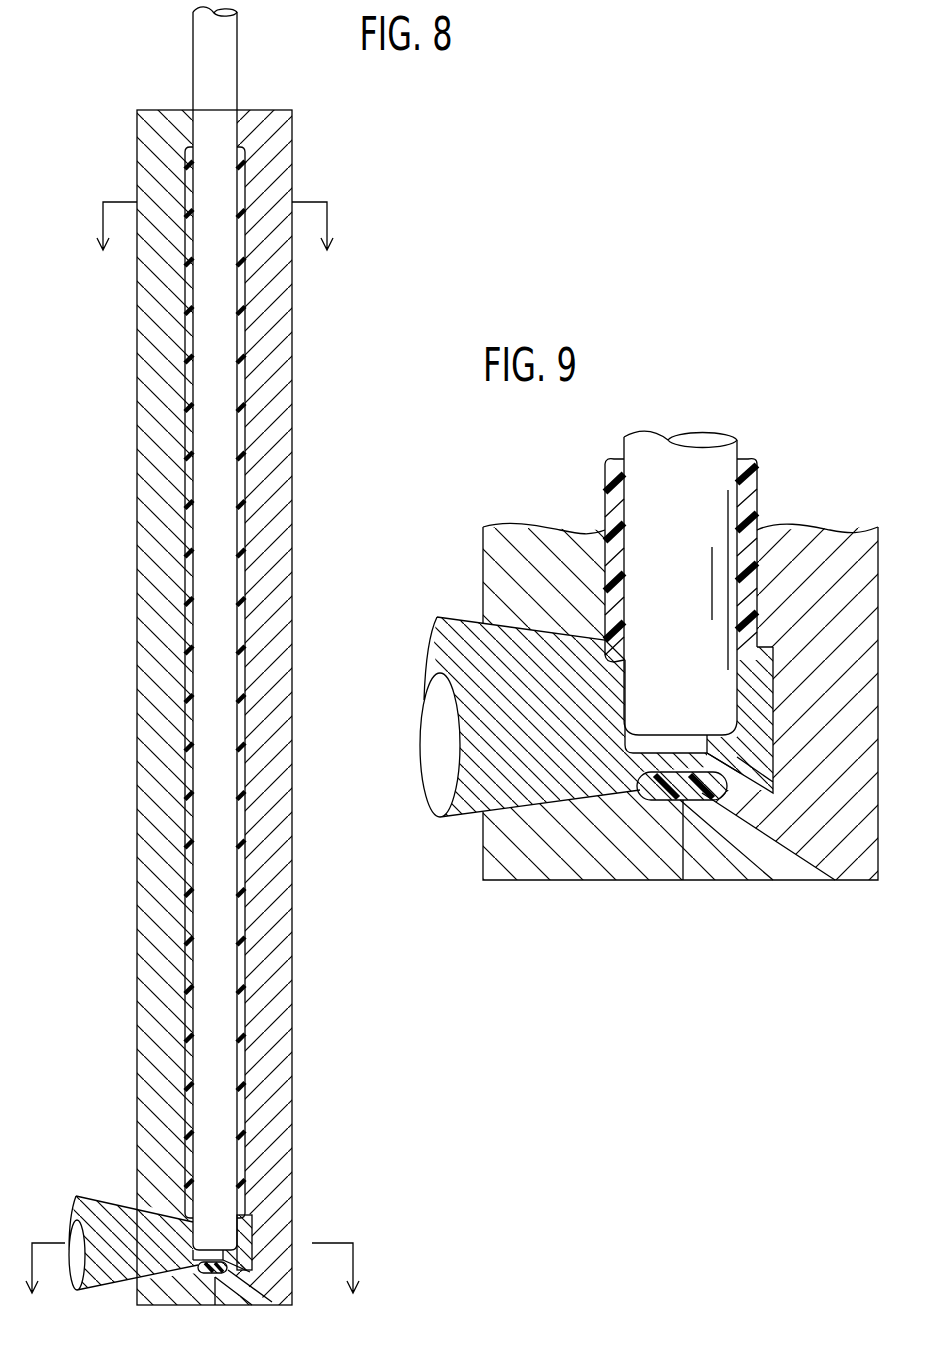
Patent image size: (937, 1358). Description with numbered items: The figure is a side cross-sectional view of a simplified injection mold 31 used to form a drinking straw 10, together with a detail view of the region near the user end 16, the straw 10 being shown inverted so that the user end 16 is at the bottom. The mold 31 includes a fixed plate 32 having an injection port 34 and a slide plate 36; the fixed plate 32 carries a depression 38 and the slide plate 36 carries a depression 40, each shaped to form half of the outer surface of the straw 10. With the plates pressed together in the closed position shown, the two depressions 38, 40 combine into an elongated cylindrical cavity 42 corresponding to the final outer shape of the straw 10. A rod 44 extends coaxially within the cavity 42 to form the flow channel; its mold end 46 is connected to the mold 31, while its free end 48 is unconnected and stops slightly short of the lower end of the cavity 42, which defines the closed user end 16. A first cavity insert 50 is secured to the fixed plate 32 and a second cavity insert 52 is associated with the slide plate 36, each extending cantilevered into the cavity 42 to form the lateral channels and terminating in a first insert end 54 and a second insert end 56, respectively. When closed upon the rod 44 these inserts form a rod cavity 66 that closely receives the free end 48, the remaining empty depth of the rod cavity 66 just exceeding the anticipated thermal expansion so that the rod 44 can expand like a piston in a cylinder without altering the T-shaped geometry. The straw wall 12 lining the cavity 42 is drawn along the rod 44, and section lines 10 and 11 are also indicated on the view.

In FIG. 8, the straw 10 is at (214, 248).
In FIG. 8, the section line 11- 11 is at (193, 1287).
In FIG. 8, the sleeve 12 is at (188, 395).
In FIG. 9, the sleeve 12 is at (605, 487).
In FIG. 8, the user end 16 is at (212, 1267).
In FIG. 9, the user end 16 is at (672, 796).
In FIG. 8, the mold 31 is at (298, 147).
In FIG. 8, the fixed plate 32 is at (293, 1102).
In FIG. 9, the fixed plate 32 is at (815, 556).
In FIG. 8, the injection port 34 is at (258, 1297).
In FIG. 9, the injection port 34 is at (796, 868).
In FIG. 8, the slide plate 36 is at (137, 813).
In FIG. 9, the slide plate 36 is at (560, 862).
In FIG. 8, the depression 38 is at (240, 553).
In FIG. 9, the depression 38 is at (755, 553).
In FIG. 8, the depression 40 is at (195, 515).
In FIG. 9, the depression 40 is at (608, 622).
In FIG. 8, the cavity 42 is at (185, 635).
In FIG. 9, the cavity 42 is at (755, 578).
In FIG. 8, the rod 44 is at (217, 445).
In FIG. 9, the rod 44 is at (697, 498).
In FIG. 8, the mold end 46 is at (210, 68).
In FIG. 9, the mold end 46 is at (680, 583).
In FIG. 8, the free end 48 is at (215, 1222).
In FIG. 9, the free end 48 is at (713, 738).
In FIG. 8, the first cavity insert 50 is at (245, 1232).
In FIG. 9, the first cavity insert 50 is at (755, 694).
In FIG. 8, the second cavity insert 52 is at (118, 1210).
In FIG. 9, the second cavity insert 52 is at (528, 652).
In FIG. 9, the first insert end 54 is at (700, 736).
In FIG. 9, the second insert end 56 is at (716, 760).
In FIG. 8, the rod cavity 66 is at (200, 1256).
In FIG. 9, the rod cavity 66 is at (660, 742).